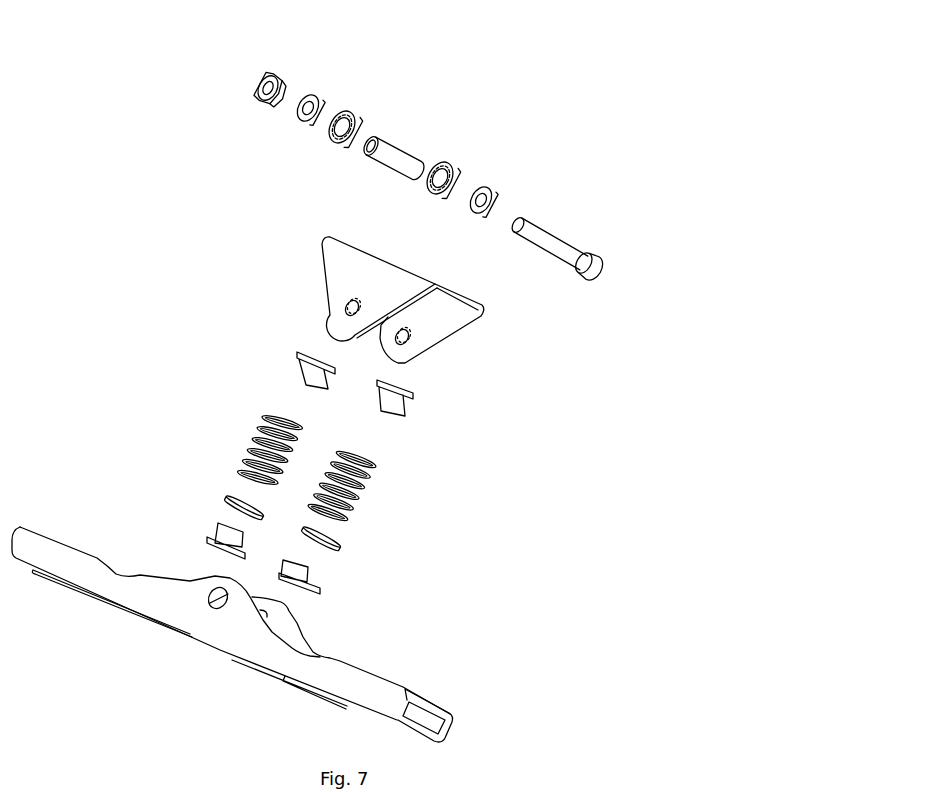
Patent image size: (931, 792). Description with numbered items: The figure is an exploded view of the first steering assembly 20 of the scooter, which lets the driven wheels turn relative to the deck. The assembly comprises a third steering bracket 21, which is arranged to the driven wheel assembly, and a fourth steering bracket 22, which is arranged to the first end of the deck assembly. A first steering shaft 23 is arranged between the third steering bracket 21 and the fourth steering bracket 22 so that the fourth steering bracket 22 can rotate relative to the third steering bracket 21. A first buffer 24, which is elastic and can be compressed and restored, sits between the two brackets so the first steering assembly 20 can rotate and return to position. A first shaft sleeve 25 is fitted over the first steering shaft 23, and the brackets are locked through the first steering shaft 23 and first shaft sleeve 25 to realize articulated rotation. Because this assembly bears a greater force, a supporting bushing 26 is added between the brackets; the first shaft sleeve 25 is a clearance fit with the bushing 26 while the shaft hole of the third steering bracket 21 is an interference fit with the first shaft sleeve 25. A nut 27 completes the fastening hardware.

The first steering assembly 20 is at (404, 25).
The third steering bracket 21 is at (182, 602).
The fourth steering bracket 22 is at (445, 313).
The first steering shaft 23 is at (595, 277).
The first buffer 24 is at (227, 430).
The first shaft sleeve 25 is at (357, 117).
The bushing 26 is at (393, 152).
The nut 27 is at (272, 90).